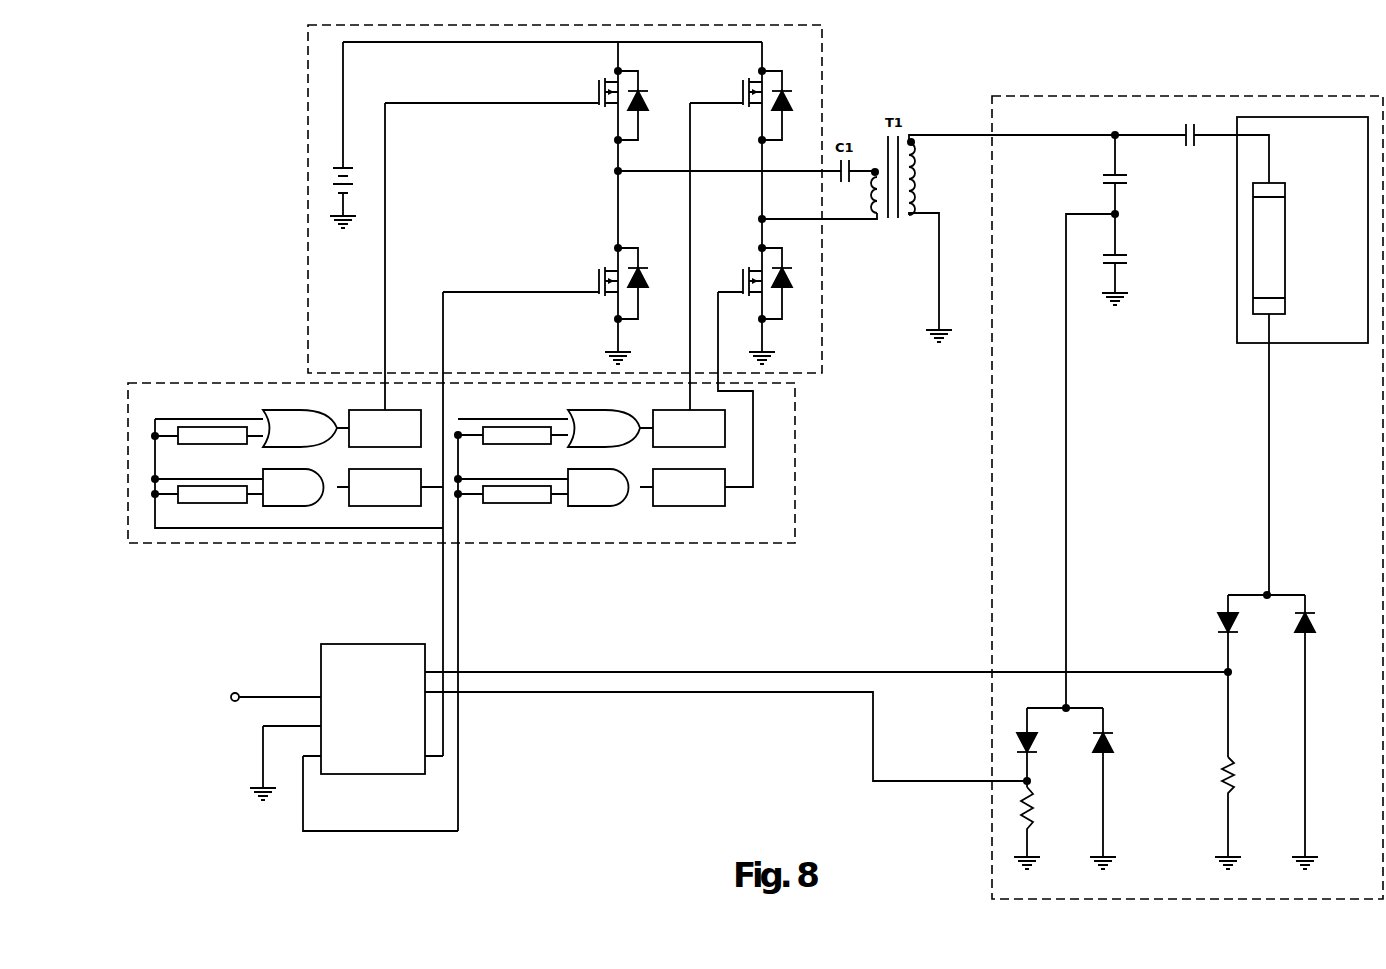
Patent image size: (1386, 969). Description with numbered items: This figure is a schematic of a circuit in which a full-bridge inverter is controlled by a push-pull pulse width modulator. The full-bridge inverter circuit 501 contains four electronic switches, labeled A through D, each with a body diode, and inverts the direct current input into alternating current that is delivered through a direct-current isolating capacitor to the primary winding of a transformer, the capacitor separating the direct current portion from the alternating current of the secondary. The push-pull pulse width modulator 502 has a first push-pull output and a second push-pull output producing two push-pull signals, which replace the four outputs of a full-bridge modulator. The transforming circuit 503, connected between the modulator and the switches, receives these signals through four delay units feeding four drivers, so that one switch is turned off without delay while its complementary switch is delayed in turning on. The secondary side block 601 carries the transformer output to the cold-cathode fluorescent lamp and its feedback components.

The full-bridge inverter circuit 501 is at (307, 118).
The push-pull pulse width modulator 502 is at (321, 645).
The transforming circuit 503 is at (247, 383).
The load circuit with CCFL and feedback network 601 is at (1238, 96).